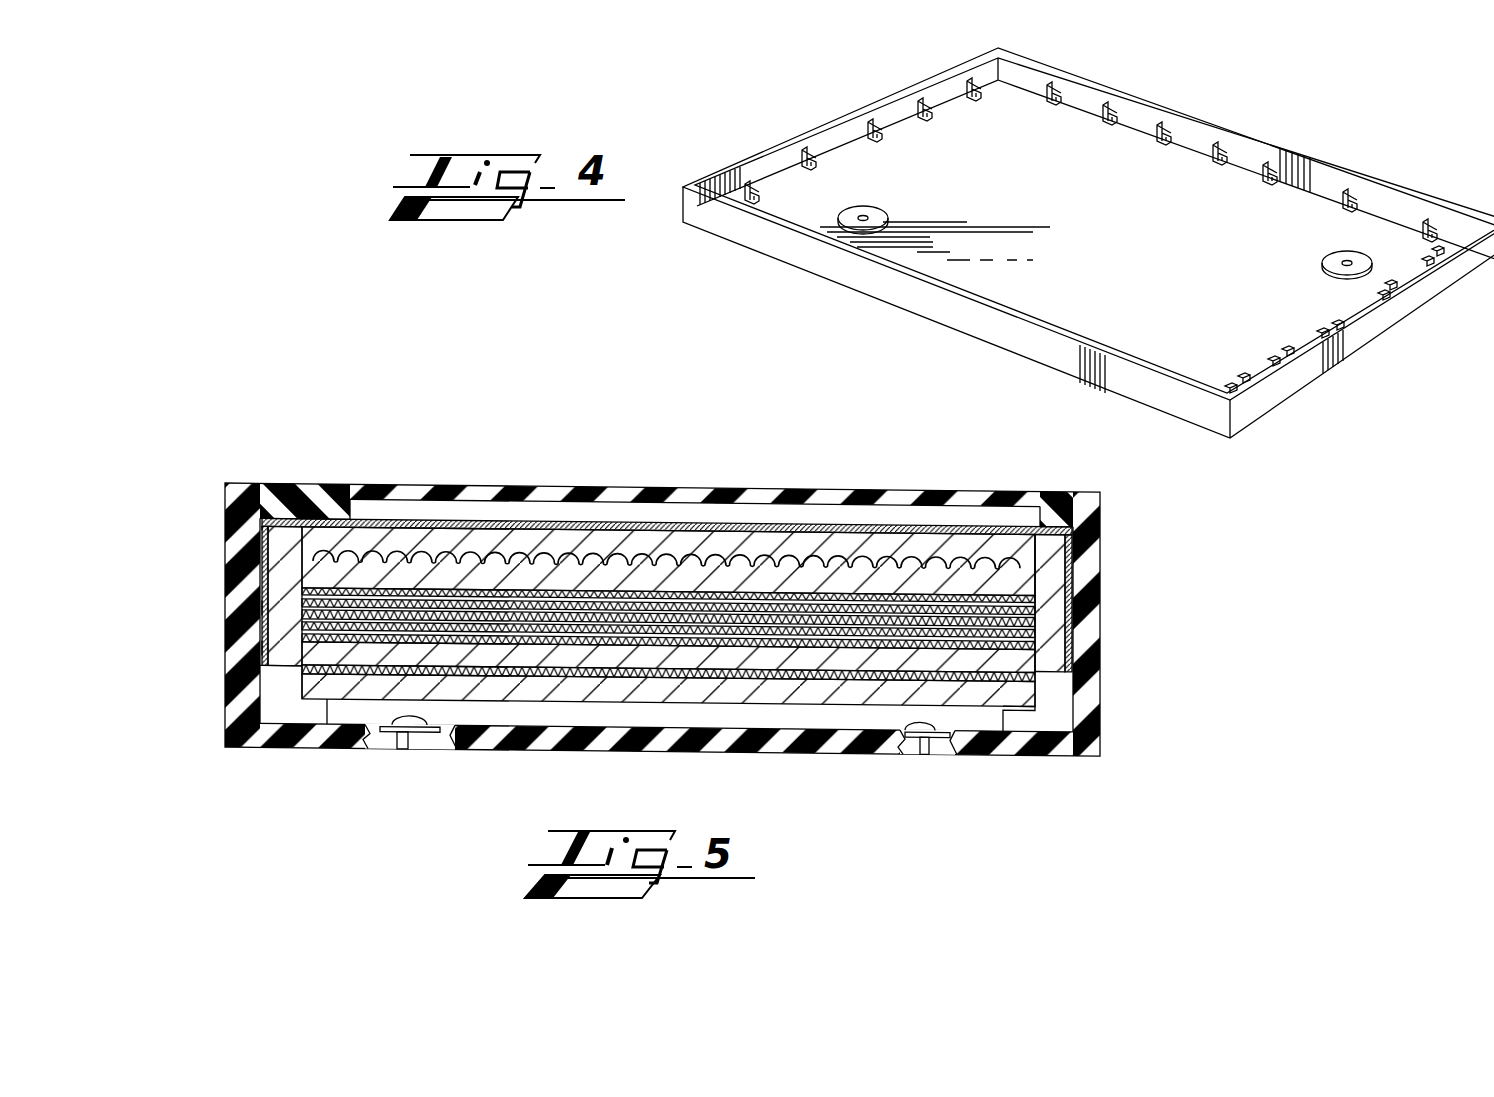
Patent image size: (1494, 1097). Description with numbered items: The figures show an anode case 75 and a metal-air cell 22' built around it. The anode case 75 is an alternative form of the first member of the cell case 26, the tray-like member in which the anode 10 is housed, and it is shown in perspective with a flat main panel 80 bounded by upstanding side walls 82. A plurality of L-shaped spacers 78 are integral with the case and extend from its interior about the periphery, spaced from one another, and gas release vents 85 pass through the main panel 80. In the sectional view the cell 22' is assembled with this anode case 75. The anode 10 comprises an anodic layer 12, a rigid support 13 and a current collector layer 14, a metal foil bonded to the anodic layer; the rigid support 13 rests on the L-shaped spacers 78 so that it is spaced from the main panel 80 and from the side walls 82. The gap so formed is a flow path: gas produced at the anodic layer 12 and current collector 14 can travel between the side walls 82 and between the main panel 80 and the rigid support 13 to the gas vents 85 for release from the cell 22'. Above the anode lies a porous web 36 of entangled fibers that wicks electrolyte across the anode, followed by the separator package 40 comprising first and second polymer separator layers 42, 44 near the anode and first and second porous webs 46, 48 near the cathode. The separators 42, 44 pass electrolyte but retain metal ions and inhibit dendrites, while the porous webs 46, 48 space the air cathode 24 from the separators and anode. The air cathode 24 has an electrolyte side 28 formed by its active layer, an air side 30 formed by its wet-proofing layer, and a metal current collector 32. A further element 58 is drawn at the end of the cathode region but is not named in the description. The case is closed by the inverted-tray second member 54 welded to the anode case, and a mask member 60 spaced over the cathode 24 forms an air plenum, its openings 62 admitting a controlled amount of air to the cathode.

In FIG. 5, the anode 10 is at (1045, 651).
In FIG. 5, the anodic layer 12 is at (593, 653).
In FIG. 5, the rigid support 13 is at (690, 687).
In FIG. 5, the current collector layer 14 is at (778, 669).
In FIG. 5, the metal-air cell 22' is at (621, 562).
In FIG. 5, the air cathode 24 is at (1000, 532).
In FIG. 5, the cell case 26 is at (220, 523).
In FIG. 5, the electrolyte side 28 is at (625, 591).
In FIG. 5, the air side 30 is at (690, 515).
In FIG. 5, the metal current collector 32 is at (312, 561).
In FIG. 5, the porous web 36 is at (1045, 594).
In FIG. 5, the separator package 40 is at (1097, 586).
In FIG. 5, the first polymer separator layer 42 is at (300, 671).
In FIG. 5, the second polymer separator layer 44 is at (262, 646).
In FIG. 5, the first porous web 46 is at (303, 586).
In FIG. 5, the second porous web 48 is at (312, 559).
In FIG. 5, the second member 54 is at (262, 607).
In FIG. 5, the end insulating strip 58 is at (935, 517).
In FIG. 5, the mask member 60 is at (655, 495).
In FIG. 5, the openings 62 is at (400, 485).
In FIG. 4, the anode case 75 is at (738, 127).
In FIG. 5, the anode case 75 is at (303, 747).
In FIG. 4, the L-shaped spacers 78 is at (975, 105).
In FIG. 5, the L-shaped spacers 78 is at (283, 700).
In FIG. 4, the main panel 80 is at (1120, 228).
In FIG. 5, the main panel 80 is at (730, 719).
In FIG. 4, the side walls 82 is at (890, 102).
In FIG. 5, the side walls 82 is at (225, 732).
In FIG. 4, the gas release vents 85 is at (863, 208).
In FIG. 5, the gas release vents 85 is at (428, 713).